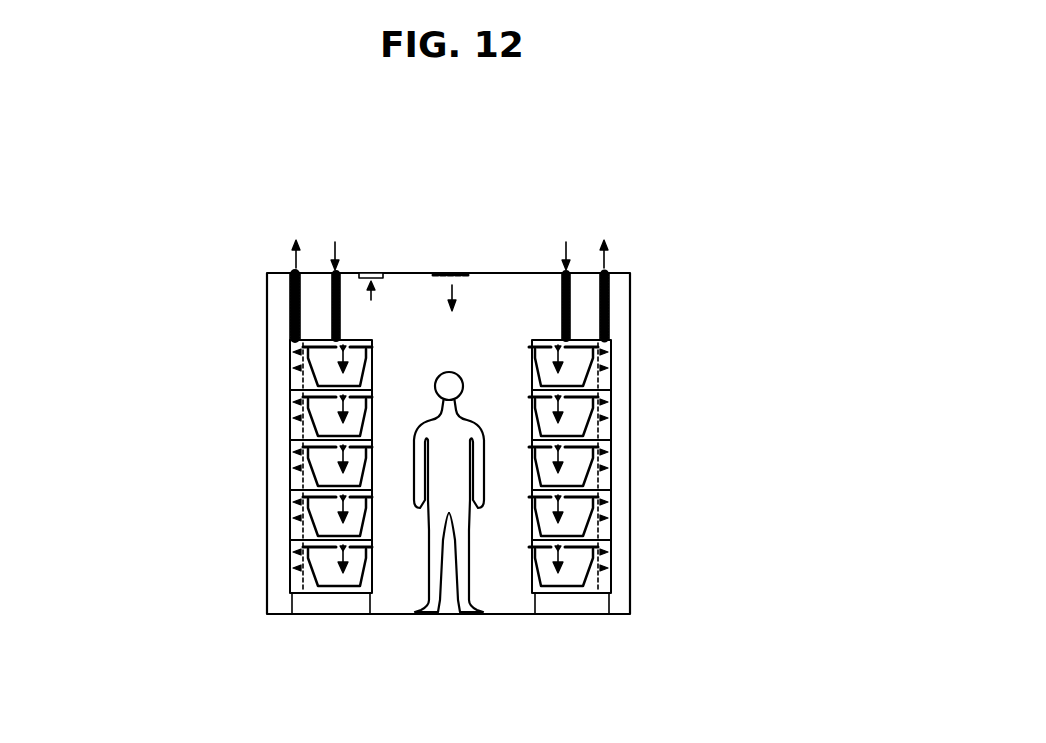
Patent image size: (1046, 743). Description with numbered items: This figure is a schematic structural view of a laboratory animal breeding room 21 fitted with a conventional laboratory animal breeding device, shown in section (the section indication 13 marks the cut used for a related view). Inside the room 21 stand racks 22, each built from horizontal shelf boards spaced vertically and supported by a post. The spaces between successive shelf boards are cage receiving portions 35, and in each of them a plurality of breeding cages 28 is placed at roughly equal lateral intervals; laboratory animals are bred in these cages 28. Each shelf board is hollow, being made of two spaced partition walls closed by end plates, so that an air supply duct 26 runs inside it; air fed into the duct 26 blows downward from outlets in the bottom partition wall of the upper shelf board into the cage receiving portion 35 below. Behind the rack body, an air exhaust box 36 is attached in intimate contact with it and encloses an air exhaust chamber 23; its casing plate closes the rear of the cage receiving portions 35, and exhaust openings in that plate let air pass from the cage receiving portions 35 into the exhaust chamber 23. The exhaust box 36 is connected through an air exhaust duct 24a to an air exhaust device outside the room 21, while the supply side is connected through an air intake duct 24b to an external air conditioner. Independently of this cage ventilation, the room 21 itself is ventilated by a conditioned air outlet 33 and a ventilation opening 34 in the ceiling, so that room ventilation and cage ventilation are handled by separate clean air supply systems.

The section line 13 is at (504, 142).
The laboratory animal breeding room 21 is at (521, 272).
The rack 22 is at (373, 354).
The air exhaust chamber 23 is at (296, 385).
The air exhaust duct 24a is at (290, 329).
The air intake duct 24b is at (291, 283).
The air supply duct 26 is at (356, 339).
The breeding cage 28 is at (393, 505).
The conditioned air outlet 33 is at (451, 272).
The ventilation opening 34 is at (371, 272).
The cage receiving portion 35 is at (532, 437).
The air exhaust box 36 is at (290, 537).